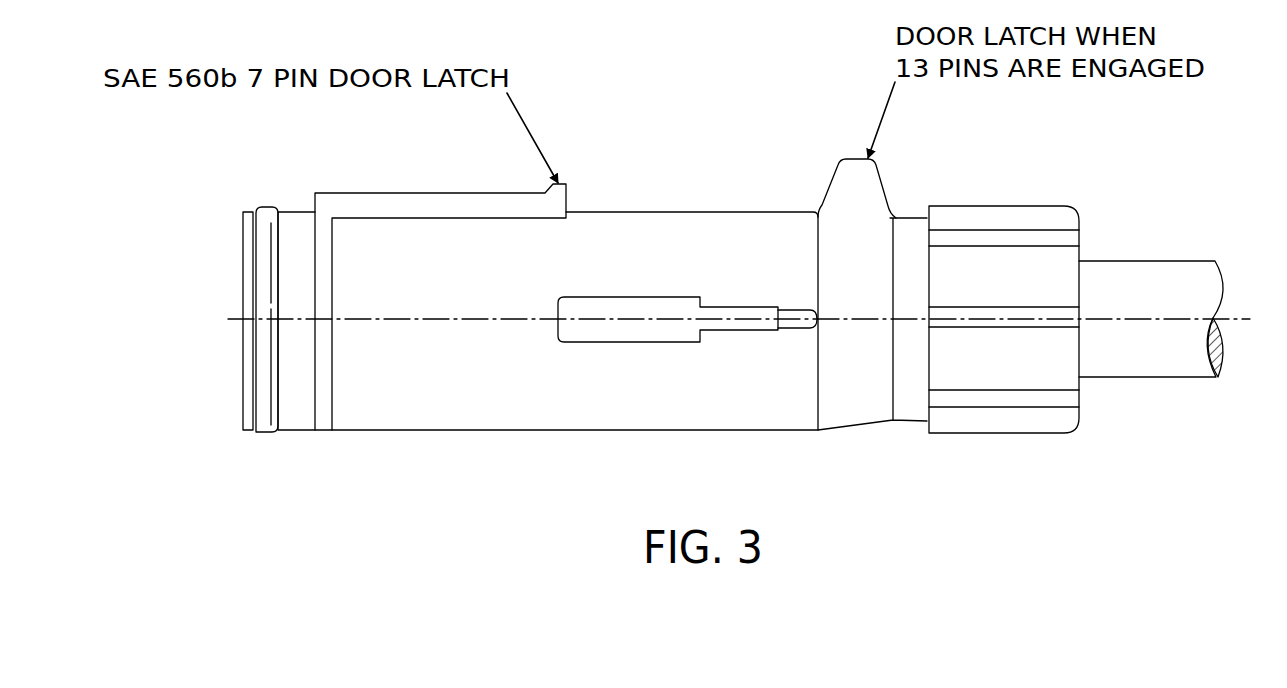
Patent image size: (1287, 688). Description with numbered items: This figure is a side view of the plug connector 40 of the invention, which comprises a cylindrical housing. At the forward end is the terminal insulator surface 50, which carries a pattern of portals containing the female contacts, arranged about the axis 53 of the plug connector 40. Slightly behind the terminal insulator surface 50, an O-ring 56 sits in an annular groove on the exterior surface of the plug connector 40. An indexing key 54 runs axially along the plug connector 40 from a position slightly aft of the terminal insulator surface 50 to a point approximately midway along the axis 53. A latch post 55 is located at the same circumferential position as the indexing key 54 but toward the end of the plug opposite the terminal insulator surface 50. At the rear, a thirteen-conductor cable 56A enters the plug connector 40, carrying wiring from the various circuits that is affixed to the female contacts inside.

The plug connector 40 is at (762, 211).
The terminal insulator surface 50 is at (243, 256).
The axis 53 is at (436, 319).
The indexing key 54 is at (380, 193).
The latch post 55 is at (887, 183).
The O-ring 56 is at (272, 433).
The thirteen-conductor cable 56A is at (1145, 261).